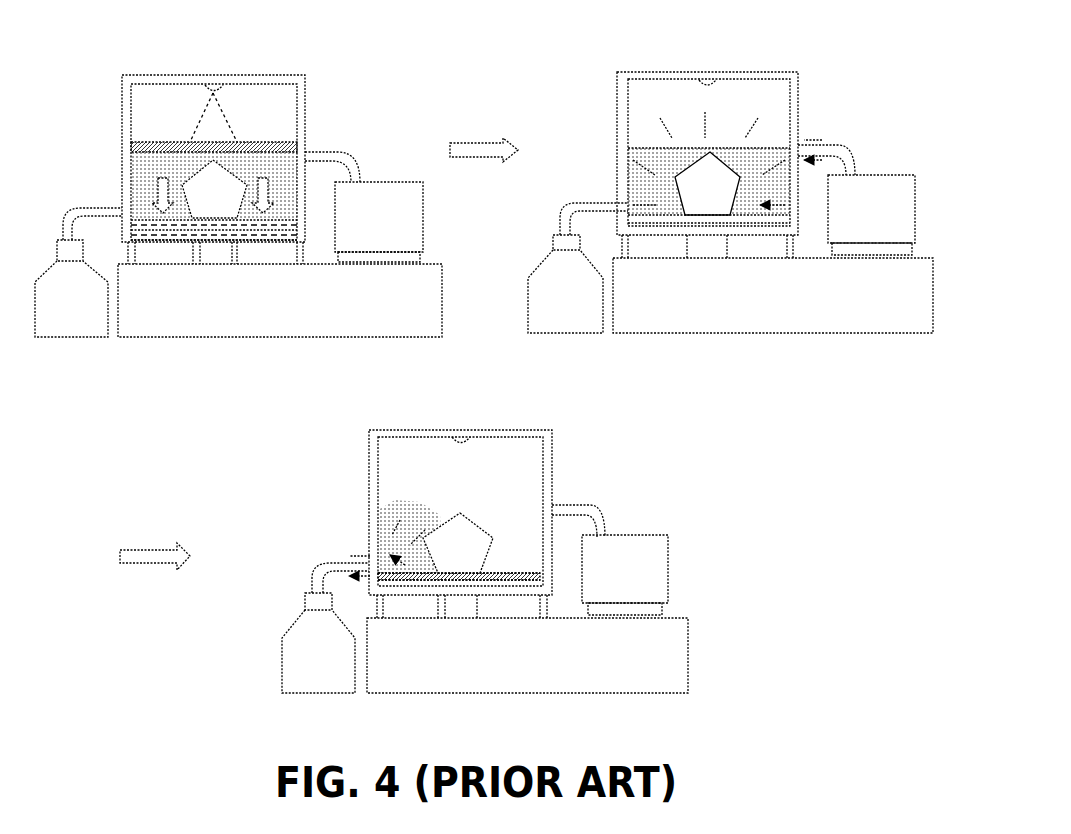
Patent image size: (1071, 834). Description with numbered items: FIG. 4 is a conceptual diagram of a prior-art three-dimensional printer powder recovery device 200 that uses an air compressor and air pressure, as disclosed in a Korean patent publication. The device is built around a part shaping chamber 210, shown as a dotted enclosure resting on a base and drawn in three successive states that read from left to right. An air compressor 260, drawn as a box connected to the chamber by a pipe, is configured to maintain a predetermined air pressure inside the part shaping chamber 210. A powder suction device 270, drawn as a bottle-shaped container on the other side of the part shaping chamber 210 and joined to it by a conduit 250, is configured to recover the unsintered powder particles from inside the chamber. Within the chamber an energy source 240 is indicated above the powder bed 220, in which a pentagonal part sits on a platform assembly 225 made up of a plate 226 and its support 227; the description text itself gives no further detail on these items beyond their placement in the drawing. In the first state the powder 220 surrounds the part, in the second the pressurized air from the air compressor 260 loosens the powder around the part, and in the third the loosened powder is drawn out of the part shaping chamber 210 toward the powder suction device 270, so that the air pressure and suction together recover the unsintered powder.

The additive manufacturing apparatus 200 is at (314, 130).
The part shaping chamber 210 is at (622, 148).
The build material powder layer 220 is at (145, 148).
The build platform assembly 225 is at (303, 392).
The build plate 226 is at (207, 237).
The platform support 227 is at (222, 255).
The energy source 240 is at (236, 87).
The powder supply conduit 250 is at (648, 292).
The air compressor 260 is at (630, 553).
The powder suction device 270 is at (73, 317).